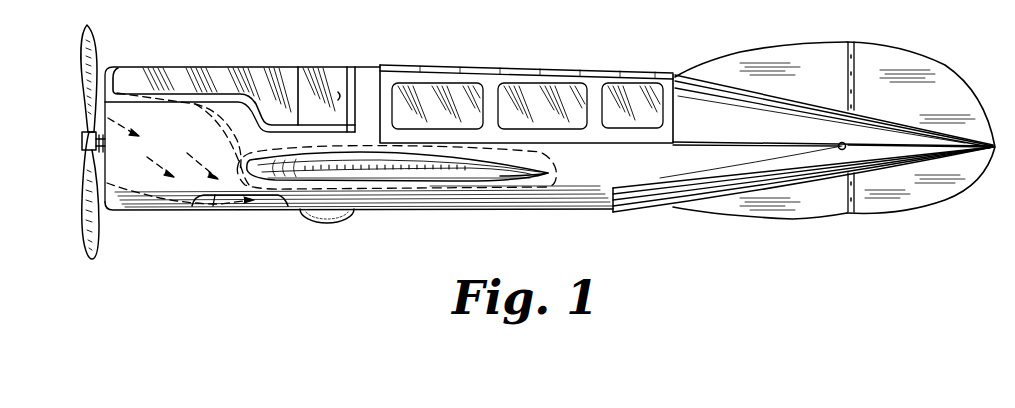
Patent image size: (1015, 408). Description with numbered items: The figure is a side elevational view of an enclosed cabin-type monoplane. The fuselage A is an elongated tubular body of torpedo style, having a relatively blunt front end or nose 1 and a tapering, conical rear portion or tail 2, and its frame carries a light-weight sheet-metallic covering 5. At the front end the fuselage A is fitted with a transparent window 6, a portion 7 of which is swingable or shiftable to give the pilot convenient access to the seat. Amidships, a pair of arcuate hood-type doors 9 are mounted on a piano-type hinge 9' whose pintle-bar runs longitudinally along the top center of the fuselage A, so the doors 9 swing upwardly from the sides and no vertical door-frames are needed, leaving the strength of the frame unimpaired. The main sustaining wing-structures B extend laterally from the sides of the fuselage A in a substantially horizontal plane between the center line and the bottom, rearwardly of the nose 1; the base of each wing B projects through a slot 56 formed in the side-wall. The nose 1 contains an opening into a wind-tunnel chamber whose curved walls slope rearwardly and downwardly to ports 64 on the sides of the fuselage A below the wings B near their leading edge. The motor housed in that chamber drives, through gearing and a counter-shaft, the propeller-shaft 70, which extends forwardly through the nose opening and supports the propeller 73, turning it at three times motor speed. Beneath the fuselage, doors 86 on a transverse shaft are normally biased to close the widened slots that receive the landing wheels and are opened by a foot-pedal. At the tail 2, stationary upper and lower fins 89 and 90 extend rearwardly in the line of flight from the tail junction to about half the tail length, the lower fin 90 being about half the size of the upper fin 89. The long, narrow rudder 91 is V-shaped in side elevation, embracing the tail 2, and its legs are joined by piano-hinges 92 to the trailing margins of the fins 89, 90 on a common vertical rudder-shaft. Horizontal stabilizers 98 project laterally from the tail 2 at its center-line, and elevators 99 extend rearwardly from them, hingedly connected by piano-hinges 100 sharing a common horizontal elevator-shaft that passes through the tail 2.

The nose 1 is at (105, 172).
The tail 2 is at (777, 97).
The covering 5 is at (620, 190).
The window 6 is at (266, 80).
The portion of the window 7 is at (330, 82).
The hood-type doors 9 is at (526, 89).
The piano-type hinge 9' is at (526, 56).
The slot 56 is at (543, 177).
The ports 64 is at (213, 207).
The propeller-shaft 70 is at (82, 134).
The propeller 73 is at (85, 76).
The doors 86 is at (336, 221).
The upper fin 89 is at (752, 52).
The lower fin 90 is at (772, 216).
The rudder 91 is at (950, 62).
The piano-hinges 92 is at (856, 72).
The horizontal stabilizers 98 is at (757, 141).
The elevators 99 is at (875, 143).
The piano-hinges 100 is at (838, 148).
The fuselage A is at (488, 212).
The wing-structures B is at (383, 175).